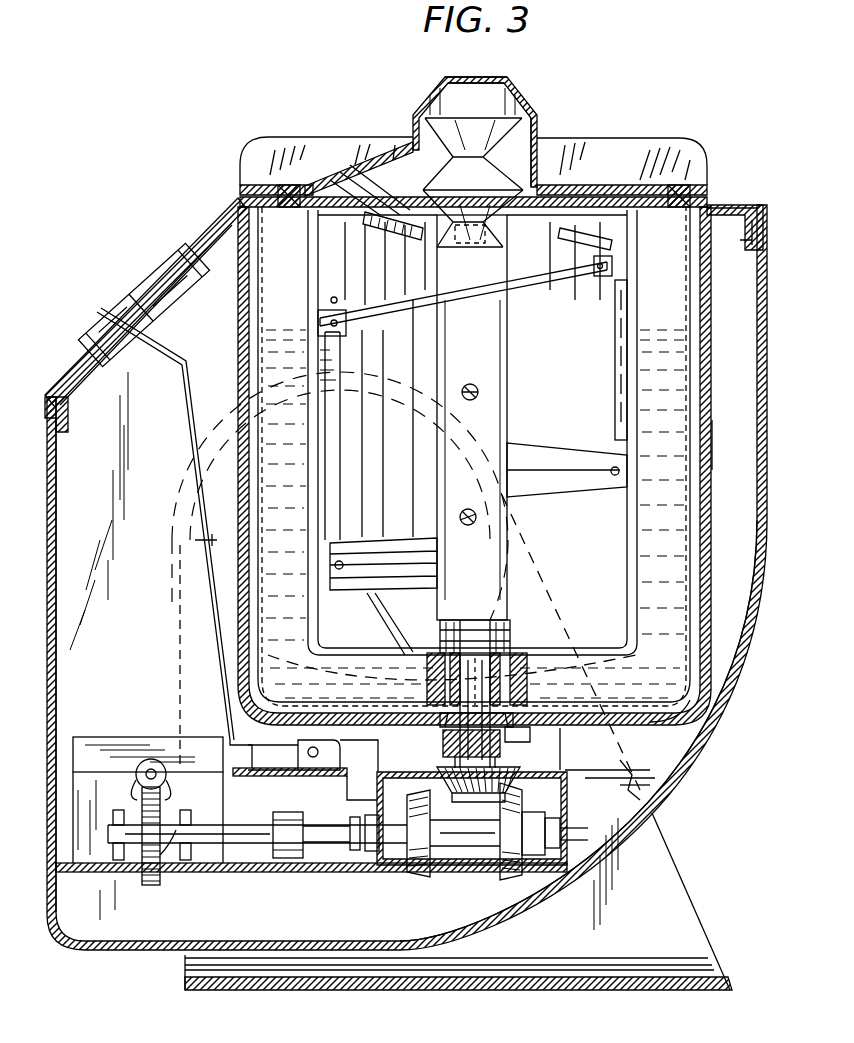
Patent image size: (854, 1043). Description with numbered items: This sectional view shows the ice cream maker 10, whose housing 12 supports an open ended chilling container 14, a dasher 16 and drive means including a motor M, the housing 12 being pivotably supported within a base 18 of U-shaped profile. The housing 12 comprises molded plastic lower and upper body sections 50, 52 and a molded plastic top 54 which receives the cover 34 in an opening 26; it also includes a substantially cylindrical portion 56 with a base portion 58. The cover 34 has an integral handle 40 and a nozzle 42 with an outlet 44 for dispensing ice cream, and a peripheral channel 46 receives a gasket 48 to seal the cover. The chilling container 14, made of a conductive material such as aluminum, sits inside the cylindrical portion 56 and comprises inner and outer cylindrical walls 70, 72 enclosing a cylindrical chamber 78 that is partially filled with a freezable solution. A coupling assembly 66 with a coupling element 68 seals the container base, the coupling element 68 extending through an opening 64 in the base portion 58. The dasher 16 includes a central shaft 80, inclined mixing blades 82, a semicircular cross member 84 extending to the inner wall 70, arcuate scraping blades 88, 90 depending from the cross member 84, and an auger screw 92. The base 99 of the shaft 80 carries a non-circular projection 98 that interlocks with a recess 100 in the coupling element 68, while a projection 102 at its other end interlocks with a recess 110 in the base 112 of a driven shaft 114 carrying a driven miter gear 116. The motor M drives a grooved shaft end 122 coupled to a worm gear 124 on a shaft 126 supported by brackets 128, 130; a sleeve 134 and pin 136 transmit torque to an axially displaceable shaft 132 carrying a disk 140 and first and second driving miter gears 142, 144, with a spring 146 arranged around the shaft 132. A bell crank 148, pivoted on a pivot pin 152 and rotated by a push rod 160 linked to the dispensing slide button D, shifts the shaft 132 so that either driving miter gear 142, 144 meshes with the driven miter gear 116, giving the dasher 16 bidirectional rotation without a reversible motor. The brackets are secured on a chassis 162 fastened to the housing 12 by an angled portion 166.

The ice cream maker 10 is at (765, 137).
The housing 12 is at (766, 318).
The open ended chilling container 14 is at (250, 302).
The dasher 16 is at (430, 267).
The base 18 is at (710, 966).
The opening 26 is at (705, 210).
The cover 34 is at (620, 140).
The handle 40 is at (303, 150).
The nozzle 42 is at (428, 102).
The outlet 44 is at (488, 78).
The peripheral channel 46 is at (676, 192).
The gasket 48 is at (285, 192).
The lower body section 50 is at (760, 552).
The upper body section 52 is at (52, 714).
The top 54 is at (56, 400).
The cylindrical portion 56 is at (710, 420).
The base portion 58 is at (645, 724).
The opening 64 is at (528, 732).
The coupling assembly 66 is at (528, 666).
The coupling element 68 is at (478, 686).
The inner cylindrical wall 70 is at (310, 246).
The outer cylindrical wall 72 is at (262, 282).
The cylindrical chamber 78 is at (298, 525).
The central shaft 80 is at (437, 333).
The mixing blades 82 is at (553, 465).
The cross member 84 is at (536, 276).
The arcuate scraping blade 88 is at (330, 456).
The arcuate scraping blade 90 is at (613, 360).
The auger screw 92 is at (528, 118).
The projection 98 is at (446, 614).
The base of shaft 99 is at (472, 640).
The recess 100 is at (492, 582).
The projection 102 is at (445, 735).
The recess 110 is at (502, 746).
The base of driven shaft 112 is at (445, 752).
The driven shaft 114 is at (472, 818).
The driven miter gear 116 is at (478, 800).
The grooved end 122 is at (155, 757).
The worm gear 124 is at (150, 892).
The shaft 126 is at (170, 878).
The bracket 128 is at (130, 812).
The bracket 130 is at (186, 818).
The axially displaceable shaft 132 is at (304, 858).
The sleeve 134 is at (292, 880).
The pin 136 is at (283, 835).
The disk 140 is at (354, 862).
The first driving miter gear 142 is at (414, 880).
The second driving miter gear 144 is at (508, 876).
The spring 146 is at (382, 862).
The bell crank 148 is at (305, 773).
The pivot pin 152 is at (305, 750).
The push rod 160 is at (196, 432).
The chassis 162 is at (218, 873).
The angled portion 166 is at (597, 862).
The dispensing slide button D is at (108, 326).
The motor M is at (82, 737).